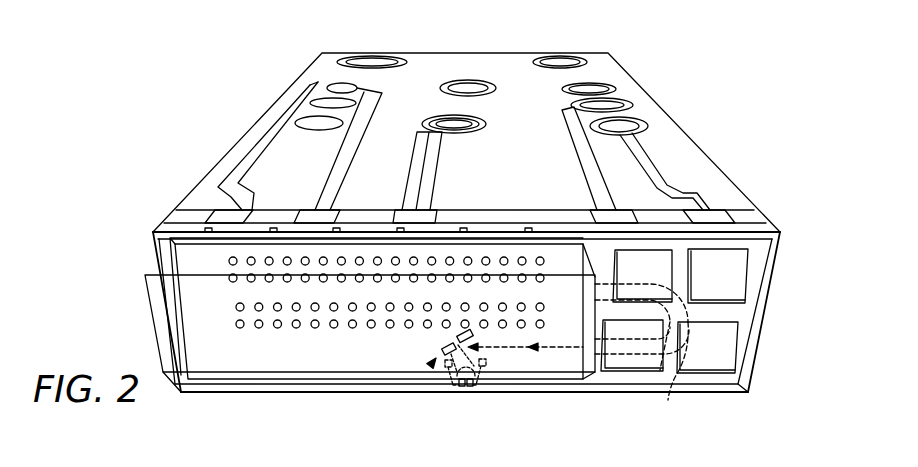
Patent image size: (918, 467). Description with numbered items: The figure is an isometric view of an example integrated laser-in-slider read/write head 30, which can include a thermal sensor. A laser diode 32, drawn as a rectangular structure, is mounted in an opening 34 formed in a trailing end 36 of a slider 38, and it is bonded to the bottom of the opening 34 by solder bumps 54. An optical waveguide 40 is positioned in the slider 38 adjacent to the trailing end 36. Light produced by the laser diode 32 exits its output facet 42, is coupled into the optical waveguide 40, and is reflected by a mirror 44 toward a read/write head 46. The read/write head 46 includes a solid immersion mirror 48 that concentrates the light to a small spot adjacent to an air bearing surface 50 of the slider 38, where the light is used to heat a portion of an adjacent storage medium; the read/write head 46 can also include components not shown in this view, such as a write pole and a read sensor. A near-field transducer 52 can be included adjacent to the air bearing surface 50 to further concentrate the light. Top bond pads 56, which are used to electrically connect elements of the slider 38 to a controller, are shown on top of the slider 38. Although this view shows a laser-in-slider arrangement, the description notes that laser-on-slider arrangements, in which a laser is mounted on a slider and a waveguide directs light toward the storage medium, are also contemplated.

The integrated laser-in-slider read/write head 30 is at (681, 81).
The laser diode 32 is at (208, 352).
The opening 34 is at (187, 243).
The trailing end 36 is at (727, 390).
The slider 38 is at (673, 145).
The optical waveguide 40 is at (680, 355).
The output facet 42 is at (592, 312).
The mirror 44 is at (458, 341).
The read/write head 46 is at (431, 363).
The solid immersion mirror 48 is at (483, 370).
The air bearing surface 50 is at (362, 388).
The near-field transducer 52 is at (462, 386).
The solder bumps 54 is at (332, 311).
The top bond pads 56 is at (562, 90).